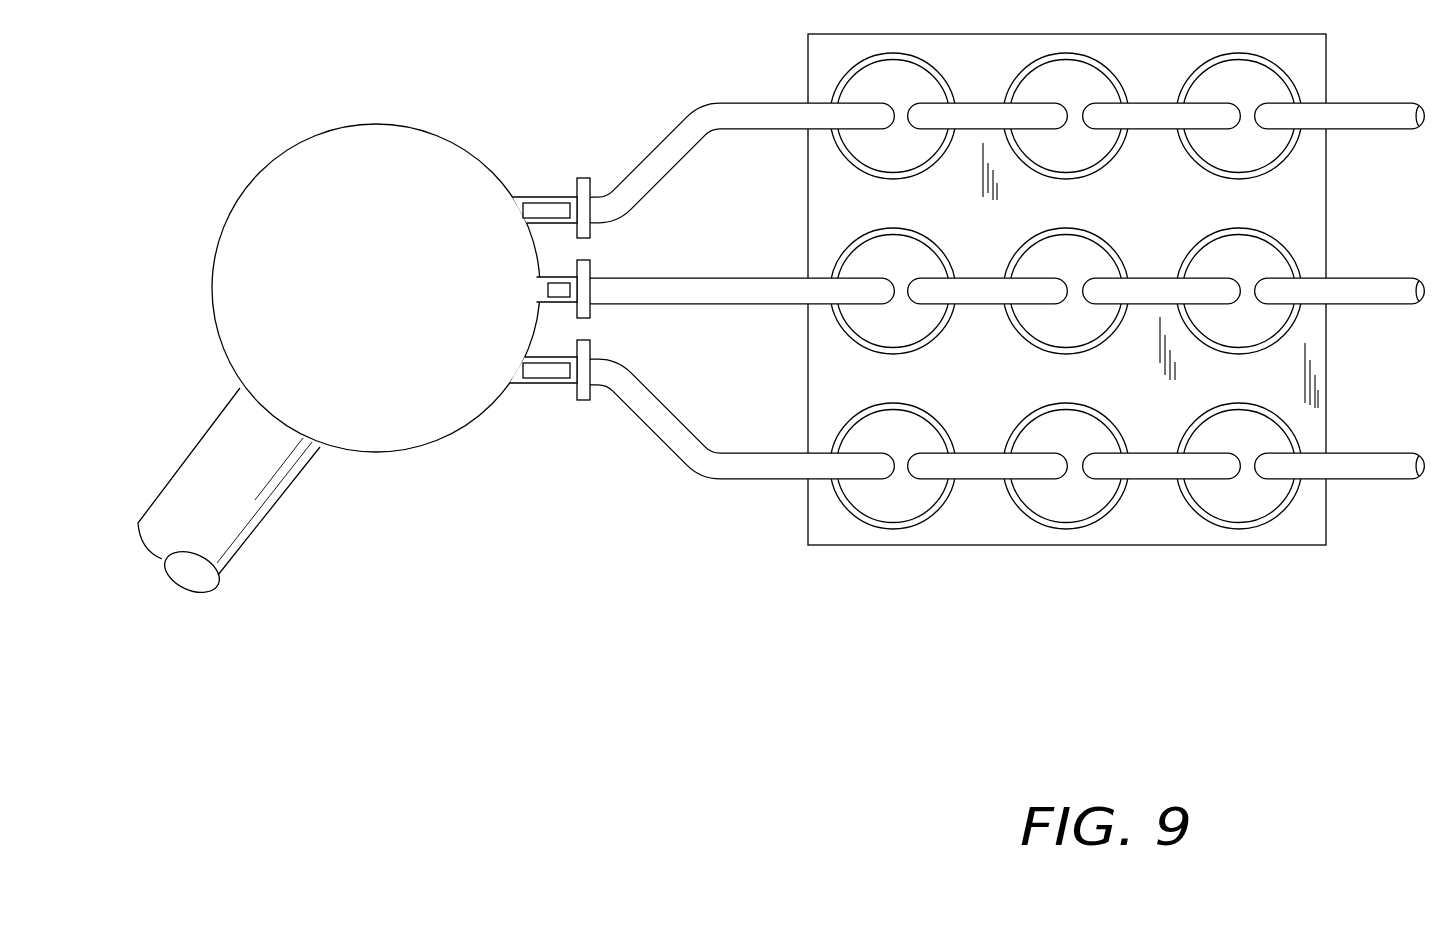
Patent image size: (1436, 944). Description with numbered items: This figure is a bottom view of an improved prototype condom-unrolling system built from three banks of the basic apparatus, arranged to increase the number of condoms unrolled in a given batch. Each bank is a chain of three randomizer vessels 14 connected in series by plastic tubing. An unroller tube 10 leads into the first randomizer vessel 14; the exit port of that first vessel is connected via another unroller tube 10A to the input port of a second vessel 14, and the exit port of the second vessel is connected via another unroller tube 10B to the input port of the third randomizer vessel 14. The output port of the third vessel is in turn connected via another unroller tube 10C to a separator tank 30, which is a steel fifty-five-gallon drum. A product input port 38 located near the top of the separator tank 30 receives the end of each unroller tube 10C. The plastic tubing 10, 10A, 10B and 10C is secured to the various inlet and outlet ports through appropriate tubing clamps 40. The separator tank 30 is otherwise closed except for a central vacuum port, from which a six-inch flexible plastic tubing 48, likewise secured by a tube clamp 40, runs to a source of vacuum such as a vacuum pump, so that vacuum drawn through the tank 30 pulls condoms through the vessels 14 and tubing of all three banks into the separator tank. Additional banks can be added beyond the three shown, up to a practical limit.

The unroller tube 10 is at (1345, 103).
The unroller tube 10A is at (1155, 102).
The unroller tube 10B is at (980, 102).
The unroller tube 10C is at (746, 101).
The randomizer vessel 14 is at (1253, 513).
The separator tank 30 is at (350, 123).
The product input port 38 is at (542, 197).
The tubing clamp 40 is at (577, 178).
The flexible plastic tubing 48 is at (250, 545).